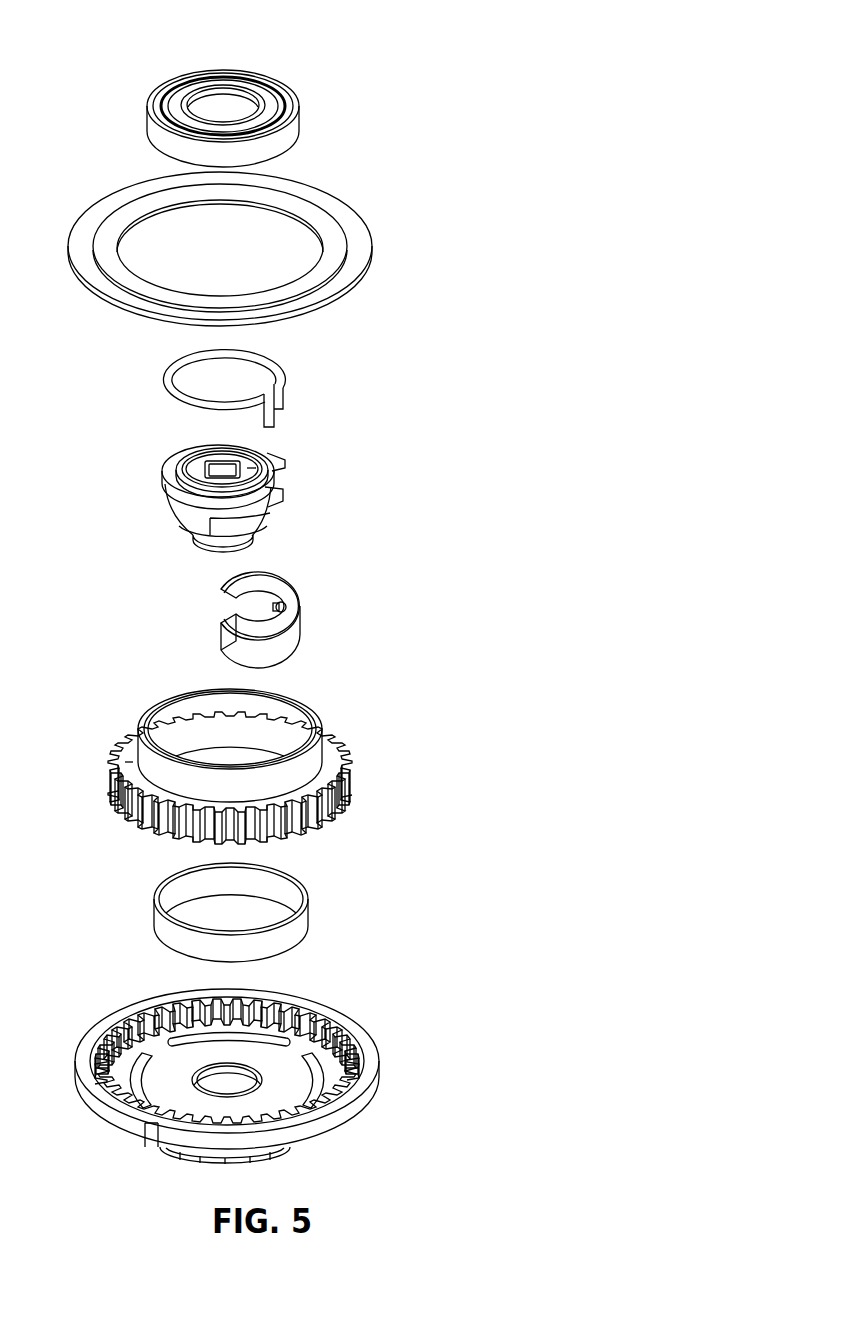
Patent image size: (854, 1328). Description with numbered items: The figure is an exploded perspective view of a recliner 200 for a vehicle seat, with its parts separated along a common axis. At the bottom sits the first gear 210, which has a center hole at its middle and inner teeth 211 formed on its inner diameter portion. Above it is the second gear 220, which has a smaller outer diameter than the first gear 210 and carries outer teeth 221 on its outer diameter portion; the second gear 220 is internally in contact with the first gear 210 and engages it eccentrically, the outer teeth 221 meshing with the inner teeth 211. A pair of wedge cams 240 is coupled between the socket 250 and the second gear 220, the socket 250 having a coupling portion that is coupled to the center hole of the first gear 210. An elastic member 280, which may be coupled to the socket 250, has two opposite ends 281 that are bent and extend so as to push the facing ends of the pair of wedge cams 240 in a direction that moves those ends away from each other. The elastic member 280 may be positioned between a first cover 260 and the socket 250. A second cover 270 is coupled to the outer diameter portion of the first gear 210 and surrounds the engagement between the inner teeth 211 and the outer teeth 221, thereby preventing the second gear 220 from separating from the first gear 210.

The recliner 200 is at (335, 43).
The first gear 210 is at (276, 1046).
The inner teeth 211 is at (310, 1022).
The second gear 220 is at (290, 752).
The outer teeth 221 is at (348, 788).
The wedge cams 240 is at (283, 592).
The socket 250 is at (168, 475).
The first cover 260 is at (295, 128).
The second cover 270 is at (362, 238).
The elastic member 280 is at (240, 385).
The two opposite ends 281 is at (275, 421).